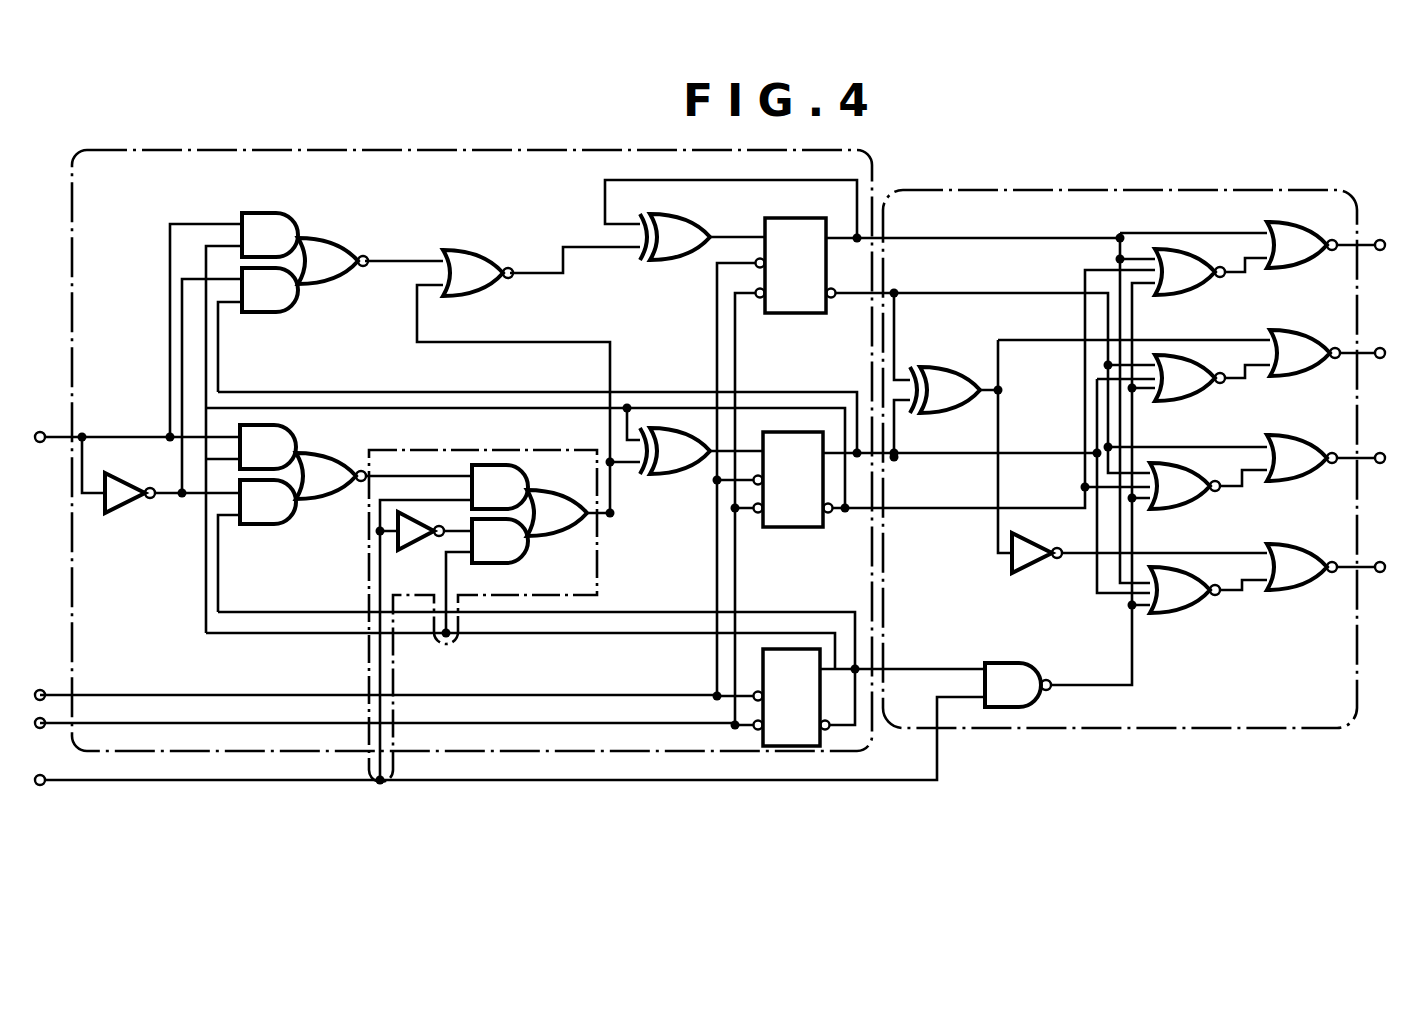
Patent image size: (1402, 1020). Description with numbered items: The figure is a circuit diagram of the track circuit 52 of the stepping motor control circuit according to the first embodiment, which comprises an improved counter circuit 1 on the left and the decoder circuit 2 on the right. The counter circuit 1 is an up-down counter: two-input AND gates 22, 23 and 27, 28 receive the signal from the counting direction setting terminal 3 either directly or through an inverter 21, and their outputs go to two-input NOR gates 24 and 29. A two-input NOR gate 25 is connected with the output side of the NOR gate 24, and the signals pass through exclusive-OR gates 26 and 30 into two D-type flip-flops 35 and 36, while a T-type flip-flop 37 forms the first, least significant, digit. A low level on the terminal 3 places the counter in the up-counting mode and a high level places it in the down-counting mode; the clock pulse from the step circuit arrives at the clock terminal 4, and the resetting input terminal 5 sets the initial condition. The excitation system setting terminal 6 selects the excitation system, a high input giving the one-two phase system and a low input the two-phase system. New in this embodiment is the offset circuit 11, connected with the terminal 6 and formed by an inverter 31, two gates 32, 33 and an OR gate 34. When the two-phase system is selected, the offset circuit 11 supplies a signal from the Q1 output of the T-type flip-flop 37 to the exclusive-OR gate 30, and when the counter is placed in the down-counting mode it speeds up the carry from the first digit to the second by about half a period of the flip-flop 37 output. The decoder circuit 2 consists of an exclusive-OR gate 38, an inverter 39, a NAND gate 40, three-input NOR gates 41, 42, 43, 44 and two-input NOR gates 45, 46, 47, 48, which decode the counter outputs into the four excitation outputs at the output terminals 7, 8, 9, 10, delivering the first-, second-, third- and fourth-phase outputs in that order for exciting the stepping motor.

The counter circuit 1 is at (327, 150).
The decoder circuit 2 is at (1112, 190).
The counting direction setting terminal 3 is at (42, 432).
The clock terminal 4 is at (42, 690).
The resetting input terminal 5 is at (42, 728).
The excitation system setting terminal 6 is at (42, 785).
The output terminal 7 is at (1380, 240).
The output terminal 8 is at (1380, 348).
The output terminal 9 is at (1380, 453).
The output terminal 10 is at (1380, 562).
The offset circuit 11 is at (600, 578).
The inverter 21 is at (122, 514).
The two-input AND gate 22 is at (278, 213).
The two-input AND gate 23 is at (270, 313).
The two-input NOR gate 24 is at (332, 238).
The two-input NOR gate 25 is at (476, 250).
The exclusive-OR gate 26 is at (660, 262).
The two-input AND gate 27 is at (285, 428).
The two-input AND gate 28 is at (262, 525).
The two-input NOR gate 29 is at (360, 456).
The exclusive-OR gate 30 is at (672, 475).
The inverter 31 is at (418, 550).
The NAND gate 32 is at (525, 472).
The NAND gate 33 is at (498, 563).
The OR gate 34 is at (556, 536).
The D-type flip-flop 35 is at (800, 313).
The D-type flip-flop 36 is at (805, 527).
The T-type flip-flop 37 is at (797, 746).
The exclusive-OR gate 38 is at (938, 367).
The inverter 39 is at (1042, 573).
The NAND gate 40 is at (1005, 663).
The three-input NOR gate 41 is at (1183, 295).
The three-input NOR gate 42 is at (1195, 401).
The three-input NOR gate 43 is at (1190, 509).
The three-input NOR gate 44 is at (1198, 613).
The two-input NOR gate 45 is at (1292, 268).
The two-input NOR gate 46 is at (1302, 376).
The two-input NOR gate 47 is at (1289, 481).
The two-input NOR gate 48 is at (1304, 590).
The track circuit 52 is at (942, 157).